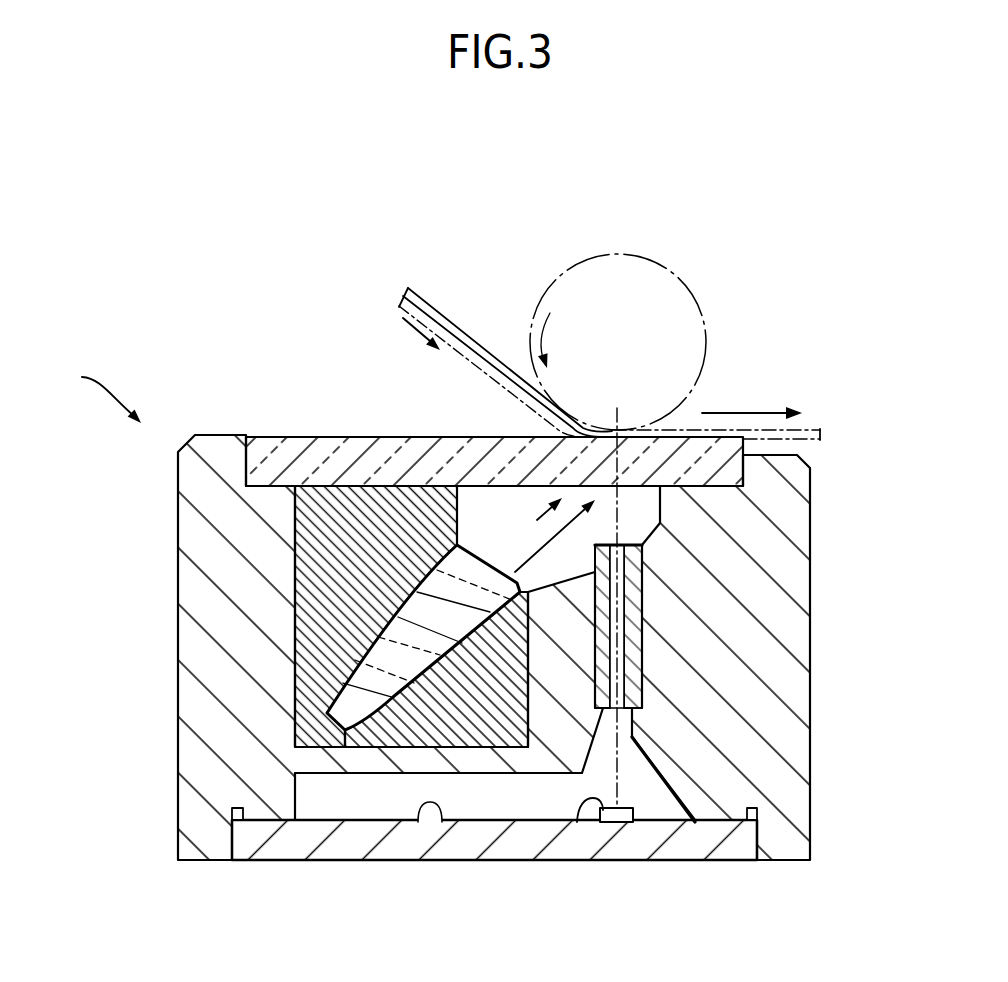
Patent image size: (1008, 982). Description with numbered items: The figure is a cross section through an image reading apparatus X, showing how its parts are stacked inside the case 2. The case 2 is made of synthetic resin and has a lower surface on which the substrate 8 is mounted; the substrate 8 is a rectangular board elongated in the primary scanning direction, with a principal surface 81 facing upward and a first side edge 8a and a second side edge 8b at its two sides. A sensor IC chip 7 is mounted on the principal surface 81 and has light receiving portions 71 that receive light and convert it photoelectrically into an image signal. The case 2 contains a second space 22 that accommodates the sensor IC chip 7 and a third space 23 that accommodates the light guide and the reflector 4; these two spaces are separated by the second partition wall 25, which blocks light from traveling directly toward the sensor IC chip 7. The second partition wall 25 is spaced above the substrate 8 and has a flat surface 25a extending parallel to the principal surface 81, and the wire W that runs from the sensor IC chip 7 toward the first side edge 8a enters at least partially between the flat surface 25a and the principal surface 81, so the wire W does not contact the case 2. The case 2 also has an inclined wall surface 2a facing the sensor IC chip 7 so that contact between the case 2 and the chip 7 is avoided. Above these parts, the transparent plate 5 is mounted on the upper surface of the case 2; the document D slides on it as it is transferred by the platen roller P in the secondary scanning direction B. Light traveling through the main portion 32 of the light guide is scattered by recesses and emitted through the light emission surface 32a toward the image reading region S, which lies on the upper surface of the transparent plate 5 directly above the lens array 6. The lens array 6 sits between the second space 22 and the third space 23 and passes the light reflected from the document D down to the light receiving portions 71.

The case 2 is at (778, 597).
The inclined wall surface 2a is at (634, 752).
The reflector 4 is at (348, 518).
The transparent plate 5 is at (725, 473).
The lens array 6 is at (597, 560).
The sensor IC chip 7 is at (633, 815).
The light receiving portion 71 is at (618, 808).
The substrate 8 is at (690, 850).
The first side edge 8a is at (232, 822).
The second side edge 8b is at (757, 822).
The principal surface 81 is at (417, 822).
The second space 22 is at (373, 803).
The third space 23 is at (463, 503).
The second partition wall 25 is at (488, 757).
The flat surface 25a is at (497, 774).
The main portion 32 is at (527, 503).
The light emission surface 32a is at (543, 536).
The document D is at (430, 310).
The platen roller P is at (690, 283).
The image reading region S is at (622, 430).
The secondary scanning direction B is at (752, 396).
The wire W is at (577, 805).
The image reading apparatus X is at (98, 389).